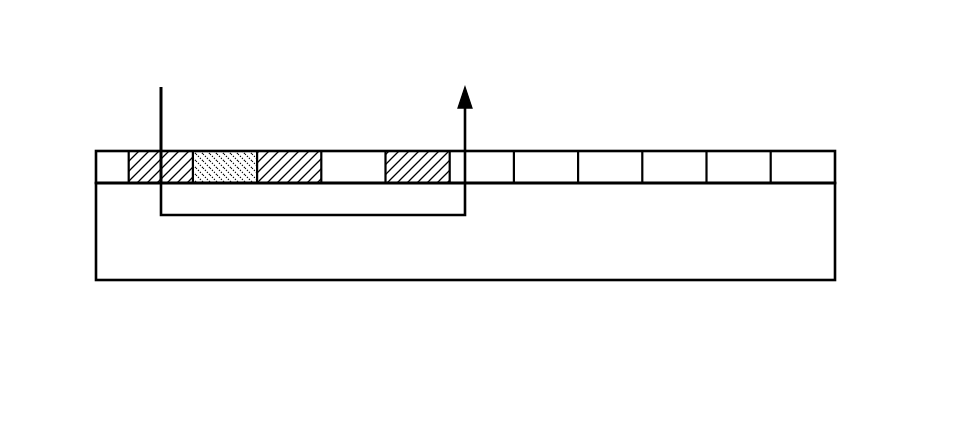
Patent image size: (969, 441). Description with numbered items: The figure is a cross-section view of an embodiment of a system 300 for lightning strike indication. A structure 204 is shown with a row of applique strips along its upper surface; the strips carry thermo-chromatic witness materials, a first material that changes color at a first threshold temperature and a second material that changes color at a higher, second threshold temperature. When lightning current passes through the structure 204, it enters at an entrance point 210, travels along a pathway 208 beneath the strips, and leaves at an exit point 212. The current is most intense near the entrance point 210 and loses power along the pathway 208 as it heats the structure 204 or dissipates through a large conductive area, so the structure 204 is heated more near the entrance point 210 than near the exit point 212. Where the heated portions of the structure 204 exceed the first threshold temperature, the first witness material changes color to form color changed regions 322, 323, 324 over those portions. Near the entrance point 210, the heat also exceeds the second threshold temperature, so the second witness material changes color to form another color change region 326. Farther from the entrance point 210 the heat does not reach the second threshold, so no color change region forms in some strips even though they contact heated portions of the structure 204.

The system for lightning strike indication 300 is at (150, 26).
The structure 204 is at (96, 212).
The pathway 208 is at (220, 216).
The entrance point 210 is at (159, 150).
The exit point 212 is at (468, 150).
The color changed region 322 is at (173, 150).
The color changed region 323 is at (309, 150).
The color changed region 324 is at (438, 150).
The color change region 326 is at (225, 150).